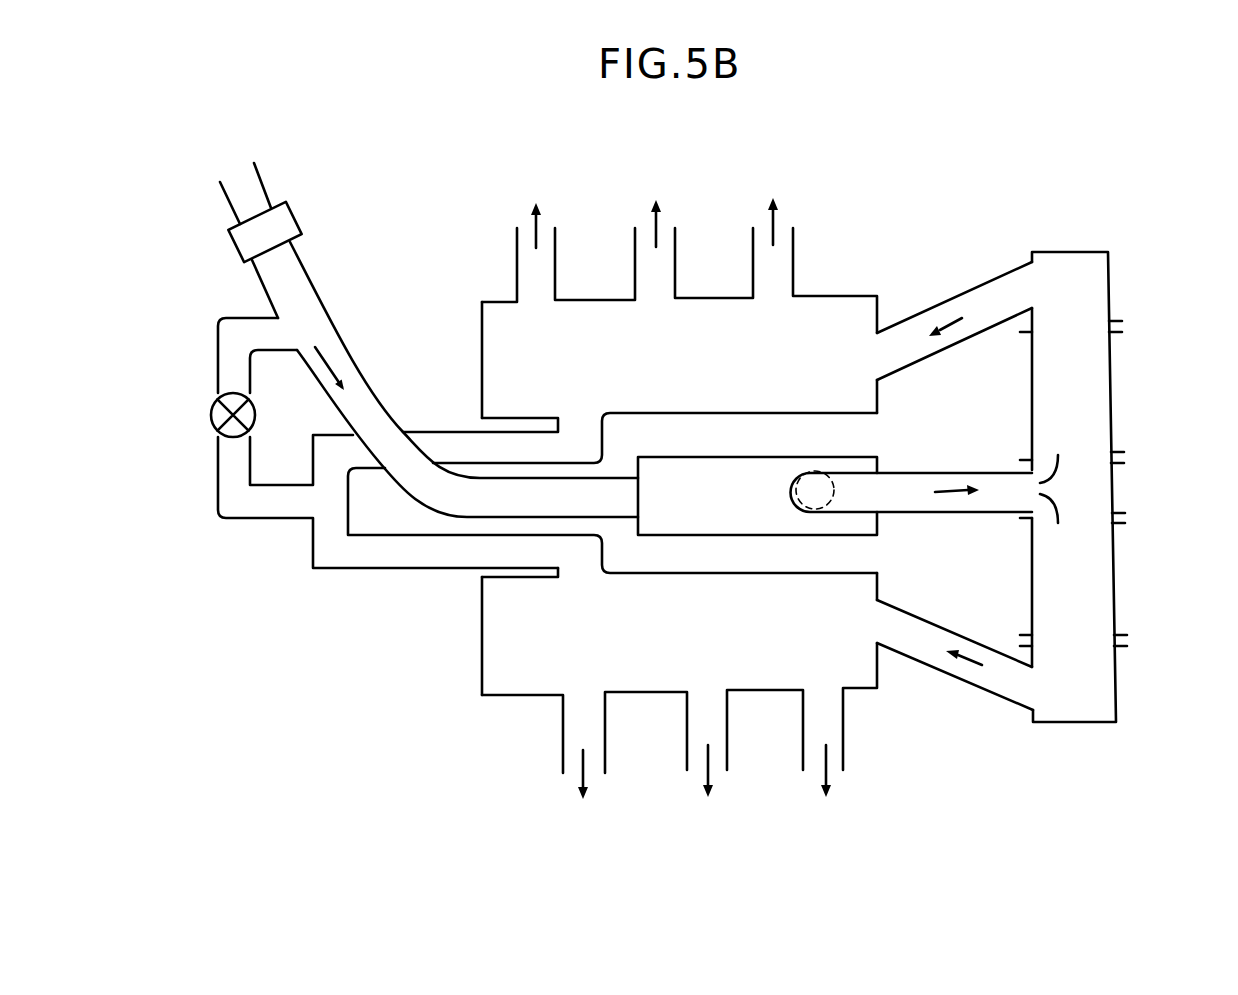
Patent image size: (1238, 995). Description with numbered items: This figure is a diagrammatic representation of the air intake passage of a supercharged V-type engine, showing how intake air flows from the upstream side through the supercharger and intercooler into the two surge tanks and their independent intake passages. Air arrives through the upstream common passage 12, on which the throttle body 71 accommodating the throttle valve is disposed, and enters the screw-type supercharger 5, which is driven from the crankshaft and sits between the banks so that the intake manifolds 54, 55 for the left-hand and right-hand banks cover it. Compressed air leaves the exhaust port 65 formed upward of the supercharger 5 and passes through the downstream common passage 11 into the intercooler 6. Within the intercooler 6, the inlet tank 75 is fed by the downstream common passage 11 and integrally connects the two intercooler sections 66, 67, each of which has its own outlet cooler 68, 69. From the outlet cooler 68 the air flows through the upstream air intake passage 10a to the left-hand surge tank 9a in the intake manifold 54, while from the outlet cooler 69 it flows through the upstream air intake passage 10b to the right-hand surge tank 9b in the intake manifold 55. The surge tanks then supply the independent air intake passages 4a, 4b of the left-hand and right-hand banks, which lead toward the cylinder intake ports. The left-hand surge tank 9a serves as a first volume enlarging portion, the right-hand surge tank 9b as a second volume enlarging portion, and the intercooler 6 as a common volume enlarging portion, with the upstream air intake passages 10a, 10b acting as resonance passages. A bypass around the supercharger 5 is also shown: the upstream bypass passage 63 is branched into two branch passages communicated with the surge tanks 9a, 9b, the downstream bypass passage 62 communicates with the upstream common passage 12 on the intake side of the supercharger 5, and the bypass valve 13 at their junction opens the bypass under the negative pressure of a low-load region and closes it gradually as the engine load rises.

The upstream common passage 12 is at (265, 180).
The throttle body 71 is at (300, 216).
The downstream bypass passage 62 is at (218, 357).
The bypass valve 13 is at (211, 417).
The upstream bypass passage 63 is at (218, 507).
The intake manifold 55 is at (470, 331).
The intake manifold 54 is at (474, 656).
The right-hand surge tank 9b is at (636, 323).
The left-hand surge tank 9a is at (642, 673).
The independent air intake passage 4b is at (556, 260).
The independent air intake passage 4a is at (606, 742).
The supercharger 5 is at (888, 540).
The downstream common passage 11 is at (972, 471).
The exhaust port 65 is at (828, 470).
The upstream air intake passage 10b is at (947, 299).
The upstream air intake passage 10a is at (975, 688).
The intercooler 6 is at (1102, 246).
The outlet cooler 69 is at (1111, 277).
The intercooler section 67 is at (1112, 402).
The inlet tank 75 is at (1113, 488).
The intercooler section 66 is at (1115, 590).
The outlet cooler 68 is at (1116, 688).